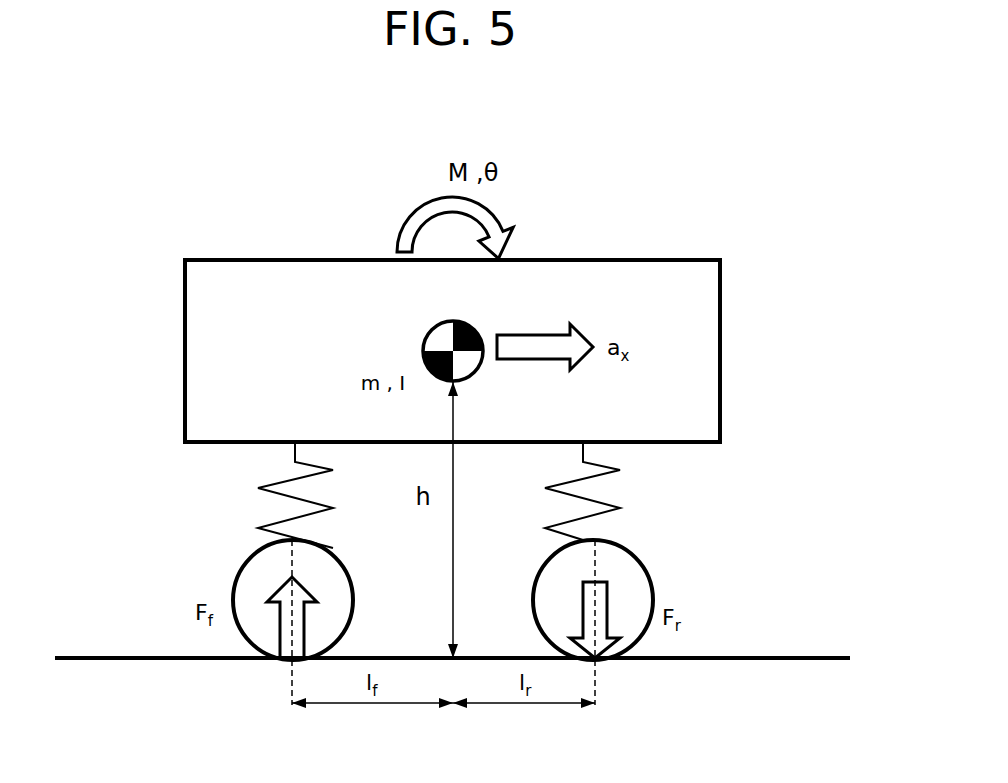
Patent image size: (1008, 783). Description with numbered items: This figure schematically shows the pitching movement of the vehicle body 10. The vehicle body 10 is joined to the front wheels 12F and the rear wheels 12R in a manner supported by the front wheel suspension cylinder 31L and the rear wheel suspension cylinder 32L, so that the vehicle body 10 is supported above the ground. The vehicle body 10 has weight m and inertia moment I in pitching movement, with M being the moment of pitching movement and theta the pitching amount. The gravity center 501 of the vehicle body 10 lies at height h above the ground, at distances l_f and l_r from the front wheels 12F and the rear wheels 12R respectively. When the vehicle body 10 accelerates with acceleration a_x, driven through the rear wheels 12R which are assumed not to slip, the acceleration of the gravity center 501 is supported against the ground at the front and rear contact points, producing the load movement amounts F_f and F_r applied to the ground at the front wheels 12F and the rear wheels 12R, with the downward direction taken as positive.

The vehicle body 10 is at (185, 282).
The gravity center 501 is at (432, 327).
The front wheel suspension cylinder 31L is at (263, 483).
The rear wheel suspension cylinder 32L is at (613, 475).
The front wheels 12F is at (250, 627).
The rear wheels 12R is at (630, 633).